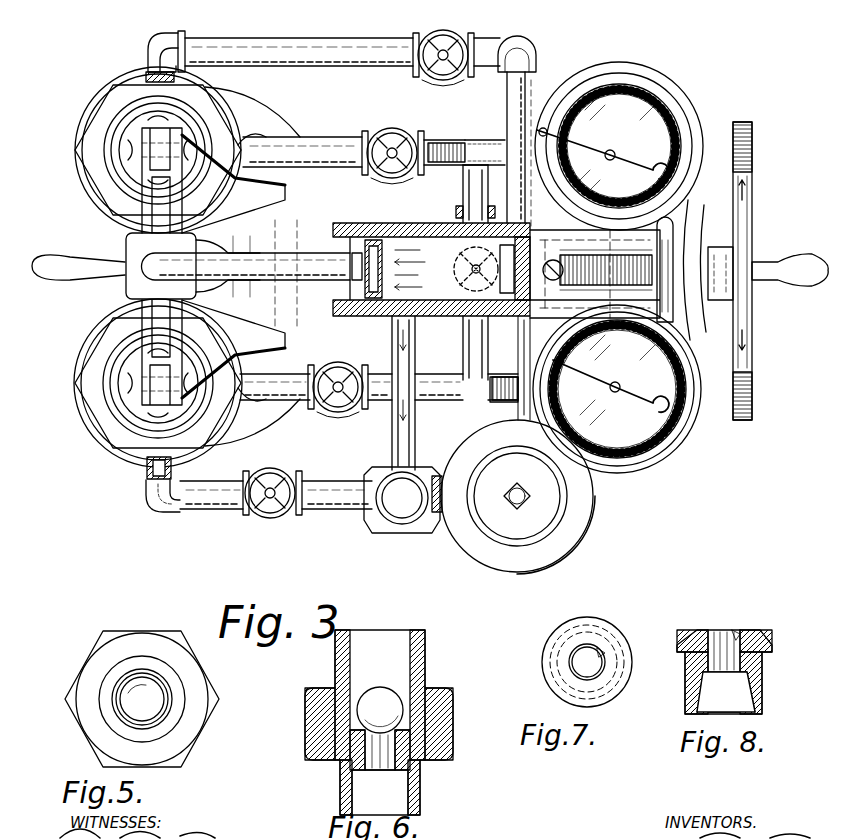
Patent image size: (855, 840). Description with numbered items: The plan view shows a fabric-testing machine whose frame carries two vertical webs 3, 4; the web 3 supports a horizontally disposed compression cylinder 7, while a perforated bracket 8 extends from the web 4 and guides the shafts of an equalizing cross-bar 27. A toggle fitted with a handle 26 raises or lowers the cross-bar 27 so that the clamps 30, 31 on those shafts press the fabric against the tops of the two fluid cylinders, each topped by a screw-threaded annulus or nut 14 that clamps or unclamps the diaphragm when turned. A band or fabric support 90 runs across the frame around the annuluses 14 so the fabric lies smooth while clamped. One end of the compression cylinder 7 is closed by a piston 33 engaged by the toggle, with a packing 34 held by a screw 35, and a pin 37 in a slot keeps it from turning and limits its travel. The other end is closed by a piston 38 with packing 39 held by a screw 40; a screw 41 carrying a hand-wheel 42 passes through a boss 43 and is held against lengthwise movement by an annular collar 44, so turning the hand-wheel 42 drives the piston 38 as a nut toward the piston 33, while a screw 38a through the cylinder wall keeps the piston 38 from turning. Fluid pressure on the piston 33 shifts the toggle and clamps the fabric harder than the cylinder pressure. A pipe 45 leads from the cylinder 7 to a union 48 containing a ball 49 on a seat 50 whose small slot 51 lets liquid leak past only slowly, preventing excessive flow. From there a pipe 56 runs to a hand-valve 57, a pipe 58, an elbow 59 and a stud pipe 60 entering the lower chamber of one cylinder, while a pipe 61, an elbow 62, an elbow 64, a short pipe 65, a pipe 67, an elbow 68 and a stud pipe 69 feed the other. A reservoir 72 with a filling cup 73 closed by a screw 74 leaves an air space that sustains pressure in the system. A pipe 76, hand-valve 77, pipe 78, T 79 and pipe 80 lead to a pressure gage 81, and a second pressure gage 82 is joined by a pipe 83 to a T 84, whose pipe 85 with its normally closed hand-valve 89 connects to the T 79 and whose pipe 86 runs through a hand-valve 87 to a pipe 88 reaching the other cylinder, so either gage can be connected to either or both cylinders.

In FIG. 3, the vertical web 3 is at (230, 283).
In FIG. 3, the vertical web 4 is at (246, 243).
In FIG. 3, the compression cylinder 7 is at (371, 237).
In FIG. 3, the perforated bracket 8 is at (213, 263).
In FIG. 3, the annulus or nut 14 is at (100, 393).
In FIG. 3, the handle 26 is at (76, 280).
In FIG. 3, the equalizing cross-bar 27 is at (131, 320).
In FIG. 3, the clamp 30 is at (105, 135).
In FIG. 3, the clamp 31 is at (112, 418).
In FIG. 3, the piston 33 is at (353, 236).
In FIG. 3, the packing 34 is at (392, 240).
In FIG. 3, the screw 35 is at (374, 301).
In FIG. 3, the pin 37 is at (618, 322).
In FIG. 3, the piston 38 is at (528, 320).
In FIG. 3, the screw 38a is at (555, 260).
In FIG. 3, the packing 39 is at (502, 240).
In FIG. 3, the screw 40 is at (519, 240).
In FIG. 3, the screw 41 is at (613, 251).
In FIG. 3, the hand-wheel 42 is at (741, 116).
In FIG. 3, the boss 43 is at (675, 240).
In FIG. 3, the annular collar 44 is at (676, 304).
In FIG. 3, the pipe 45 is at (391, 411).
In FIG. 6, the union 48 is at (299, 720).
In FIG. 6, the ball 49 is at (382, 682).
In FIG. 8, the seat 50 is at (714, 625).
In FIG. 7, the slot 51 is at (601, 653).
In FIG. 8, the slot 51 is at (737, 632).
In FIG. 3, the pipe 56 is at (346, 511).
In FIG. 3, the hand-valve 57 is at (282, 518).
In FIG. 3, the pipe 58 is at (220, 510).
In FIG. 3, the elbow 59 is at (158, 505).
In FIG. 3, the stud pipe 60 is at (144, 470).
In FIG. 3, the pipe 61 is at (512, 100).
In FIG. 3, the elbow 62 is at (526, 43).
In FIG. 3, the elbow 64 is at (503, 37).
In FIG. 3, the short pipe 65 is at (485, 38).
In FIG. 3, the pipe 67 is at (353, 40).
In FIG. 3, the elbow 68 is at (166, 29).
In FIG. 3, the stud pipe 69 is at (142, 70).
In FIG. 3, the reservoir 72 is at (548, 572).
In FIG. 3, the cup 73 is at (500, 546).
In FIG. 3, the screw 74 is at (529, 492).
In FIG. 3, the pipe 76 is at (305, 373).
In FIG. 3, the hand-valve 77 is at (341, 414).
In FIG. 3, the pipe 78 is at (380, 373).
In FIG. 3, the T 79 is at (486, 400).
In FIG. 3, the pipe 80 is at (500, 376).
In FIG. 3, the pressure gage 81 is at (665, 470).
In FIG. 3, the pressure gage 82 is at (641, 66).
In FIG. 3, the pipe 83 is at (490, 165).
In FIG. 3, the T 84 is at (468, 140).
In FIG. 3, the pipe 85 is at (462, 210).
In FIG. 3, the pipe 86 is at (440, 140).
In FIG. 3, the hand-valve 87 is at (419, 178).
In FIG. 3, the pipe 88 is at (353, 167).
In FIG. 3, the hand-valve 89 is at (470, 272).
In FIG. 3, the band or fabric support 90 is at (299, 131).